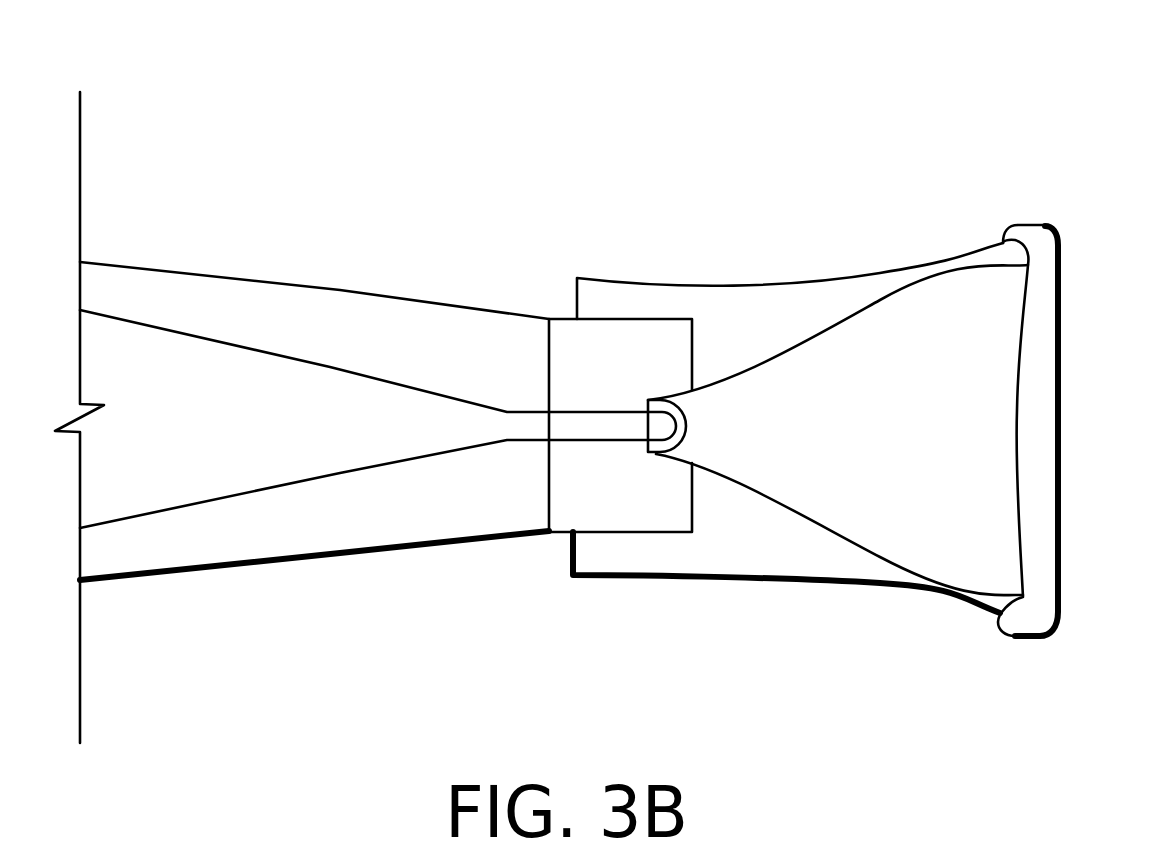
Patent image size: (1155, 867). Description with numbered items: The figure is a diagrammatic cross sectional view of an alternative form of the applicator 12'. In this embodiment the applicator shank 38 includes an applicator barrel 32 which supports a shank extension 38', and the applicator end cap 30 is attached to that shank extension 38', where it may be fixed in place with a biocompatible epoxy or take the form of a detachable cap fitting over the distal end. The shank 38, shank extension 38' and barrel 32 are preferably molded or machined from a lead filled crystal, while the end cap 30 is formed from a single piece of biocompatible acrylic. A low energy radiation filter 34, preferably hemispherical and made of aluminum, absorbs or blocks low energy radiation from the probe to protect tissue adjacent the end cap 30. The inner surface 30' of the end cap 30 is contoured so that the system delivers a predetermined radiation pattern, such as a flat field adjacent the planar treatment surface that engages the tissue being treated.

The applicator 12' is at (726, 58).
The applicator end cap 30 is at (1063, 430).
The inner surface of end cap 30' is at (838, 430).
The applicator barrel 32 is at (563, 333).
The low energy radiation filter 34 is at (645, 447).
The applicator shank 38 is at (364, 401).
The shank extension 38' is at (788, 414).